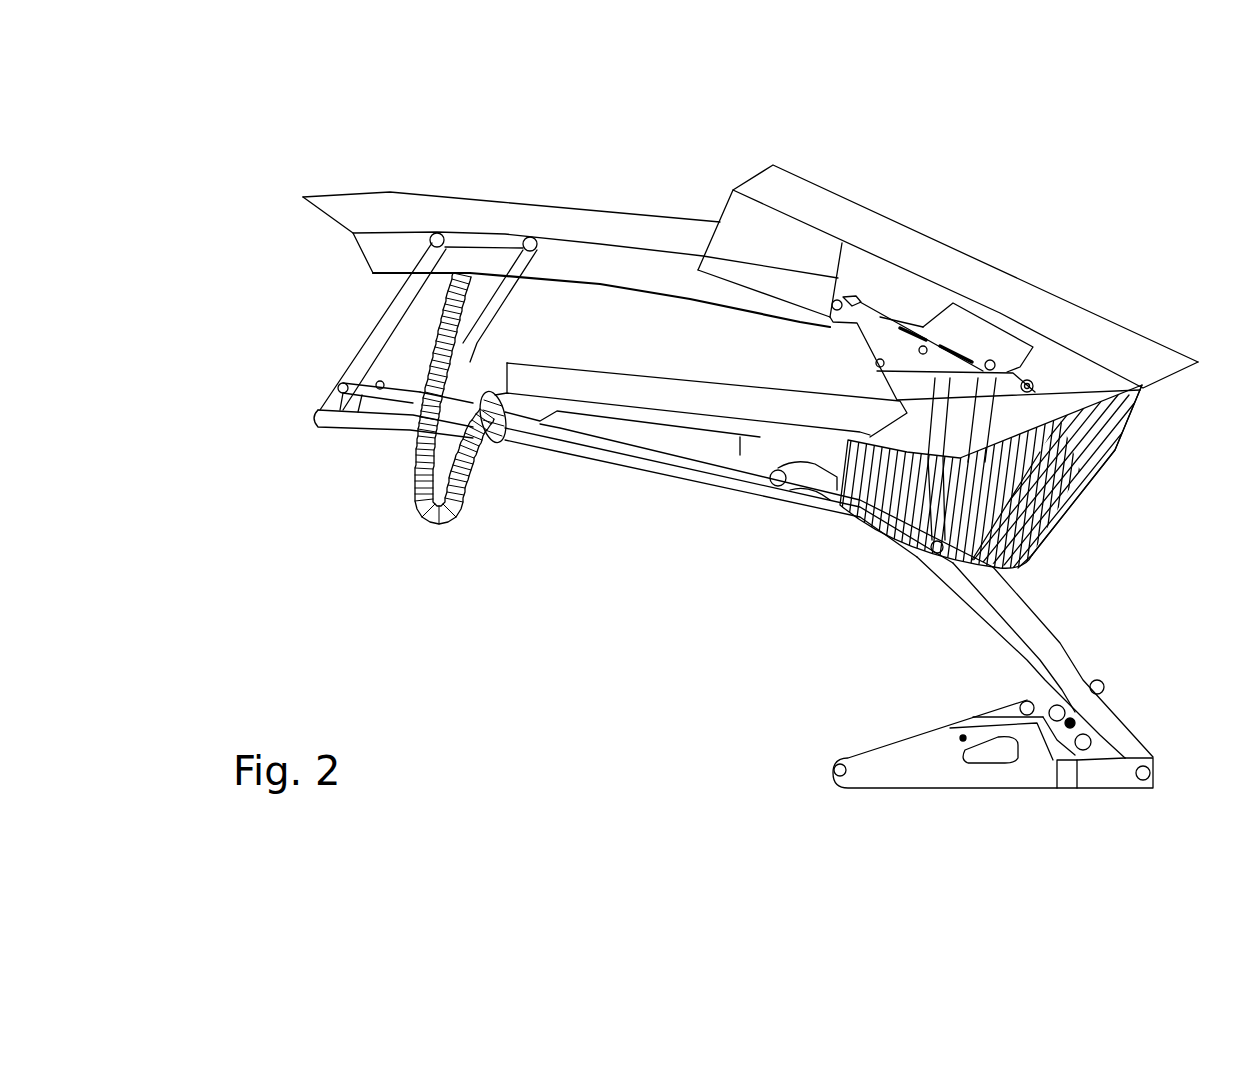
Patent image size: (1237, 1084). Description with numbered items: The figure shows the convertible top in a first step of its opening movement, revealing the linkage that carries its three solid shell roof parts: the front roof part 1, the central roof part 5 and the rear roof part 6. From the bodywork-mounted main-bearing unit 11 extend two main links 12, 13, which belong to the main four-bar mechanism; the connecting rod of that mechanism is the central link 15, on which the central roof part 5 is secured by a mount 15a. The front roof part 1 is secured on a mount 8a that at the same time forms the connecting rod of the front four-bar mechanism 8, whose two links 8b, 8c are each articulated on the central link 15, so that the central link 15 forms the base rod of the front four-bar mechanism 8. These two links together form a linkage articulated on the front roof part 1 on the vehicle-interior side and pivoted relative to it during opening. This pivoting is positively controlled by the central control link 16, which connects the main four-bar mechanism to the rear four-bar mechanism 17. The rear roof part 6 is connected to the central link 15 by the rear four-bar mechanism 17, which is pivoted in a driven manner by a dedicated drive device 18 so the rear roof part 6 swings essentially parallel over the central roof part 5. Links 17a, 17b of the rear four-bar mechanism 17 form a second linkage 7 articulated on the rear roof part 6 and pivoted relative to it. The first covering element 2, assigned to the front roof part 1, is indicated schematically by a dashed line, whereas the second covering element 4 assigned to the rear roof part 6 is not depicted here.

The front roof part 1 is at (407, 203).
The first covering element 2 is at (420, 517).
The second covering element 4 is at (1003, 443).
The central roof part 5 is at (657, 387).
The rear roof part 6 is at (833, 207).
The second linkage 7 is at (1080, 463).
The front four-bar mechanism 8 is at (406, 364).
The mount 8a is at (487, 233).
The link 8b is at (373, 323).
The link 8c is at (500, 303).
The main-bearing unit 11 is at (913, 795).
The main link 12 is at (947, 577).
The main link 13 is at (1047, 645).
The central link 15 is at (520, 433).
The mount 15a is at (673, 435).
The central control link 16 is at (377, 415).
The rear four-bar mechanism 17 is at (967, 417).
The link 17a is at (1057, 503).
The link 17b is at (1035, 543).
The drive device 18 is at (973, 350).